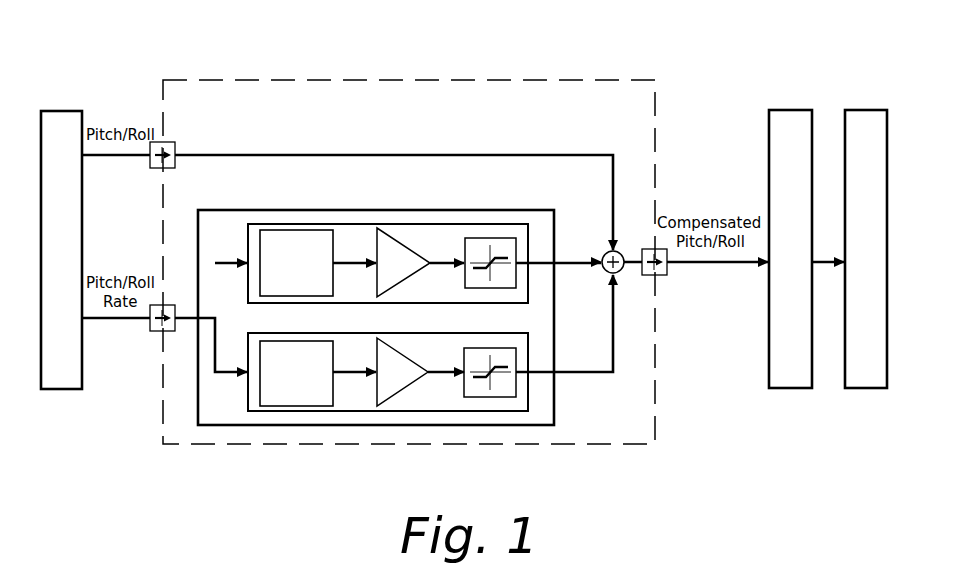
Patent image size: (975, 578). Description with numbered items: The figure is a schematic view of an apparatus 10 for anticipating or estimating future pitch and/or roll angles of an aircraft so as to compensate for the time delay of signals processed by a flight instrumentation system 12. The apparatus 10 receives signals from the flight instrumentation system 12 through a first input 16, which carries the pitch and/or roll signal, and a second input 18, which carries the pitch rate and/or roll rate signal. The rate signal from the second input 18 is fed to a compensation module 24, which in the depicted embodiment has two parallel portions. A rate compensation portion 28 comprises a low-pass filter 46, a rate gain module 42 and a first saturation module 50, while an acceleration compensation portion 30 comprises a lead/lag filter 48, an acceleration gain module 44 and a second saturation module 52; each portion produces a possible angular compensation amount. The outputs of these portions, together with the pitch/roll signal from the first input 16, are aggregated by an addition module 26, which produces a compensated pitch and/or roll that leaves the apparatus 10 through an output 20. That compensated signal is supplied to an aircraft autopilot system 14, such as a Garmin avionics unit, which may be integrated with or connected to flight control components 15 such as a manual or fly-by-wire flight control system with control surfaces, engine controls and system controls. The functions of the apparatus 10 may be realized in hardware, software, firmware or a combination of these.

The apparatus 10 is at (283, 80).
The flight instrumentation system 12 is at (68, 111).
The aircraft autopilot system 14 is at (778, 112).
The flight control components 15 is at (866, 110).
The first input 16 is at (177, 146).
The second input 18 is at (155, 331).
The output 20 is at (668, 275).
The compensation module 24 is at (275, 210).
The addition module 26 is at (603, 252).
The rate compensation portion 28 is at (350, 222).
The acceleration compensation portion 30 is at (528, 404).
The rate gain module 42 is at (393, 238).
The acceleration gain module 44 is at (400, 395).
The low-pass filter 46 is at (267, 233).
The lead/lag filter 48 is at (286, 406).
The first saturation module 50 is at (496, 240).
The second saturation module 52 is at (492, 397).